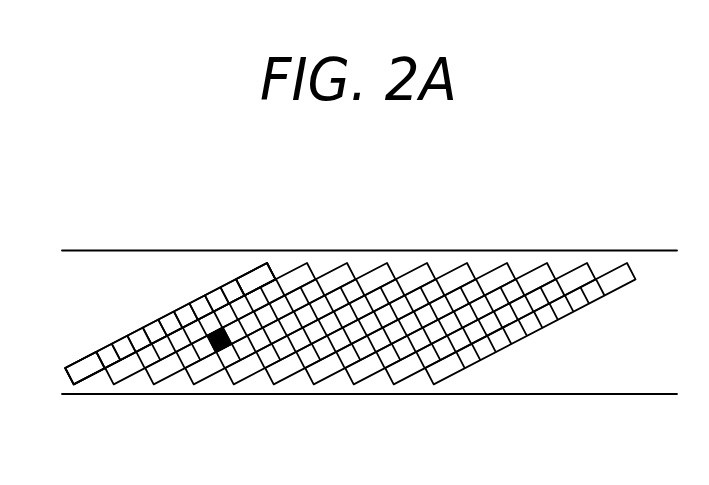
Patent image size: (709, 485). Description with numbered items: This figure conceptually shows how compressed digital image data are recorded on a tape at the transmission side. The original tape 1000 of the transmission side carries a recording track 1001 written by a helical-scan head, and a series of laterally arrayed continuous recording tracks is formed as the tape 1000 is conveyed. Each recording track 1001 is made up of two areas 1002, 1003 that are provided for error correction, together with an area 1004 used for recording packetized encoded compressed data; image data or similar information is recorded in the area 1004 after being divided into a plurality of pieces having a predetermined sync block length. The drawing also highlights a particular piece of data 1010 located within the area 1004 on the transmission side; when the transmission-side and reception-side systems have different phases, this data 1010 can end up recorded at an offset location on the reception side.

The original tape 1000 is at (534, 260).
The recording track 1001 is at (247, 177).
The area for error correction 1002 is at (90, 368).
The area for error correction 1003 is at (251, 278).
The area for recording packetized encoded compressed data 1004 is at (233, 278).
The data 1010 is at (233, 356).